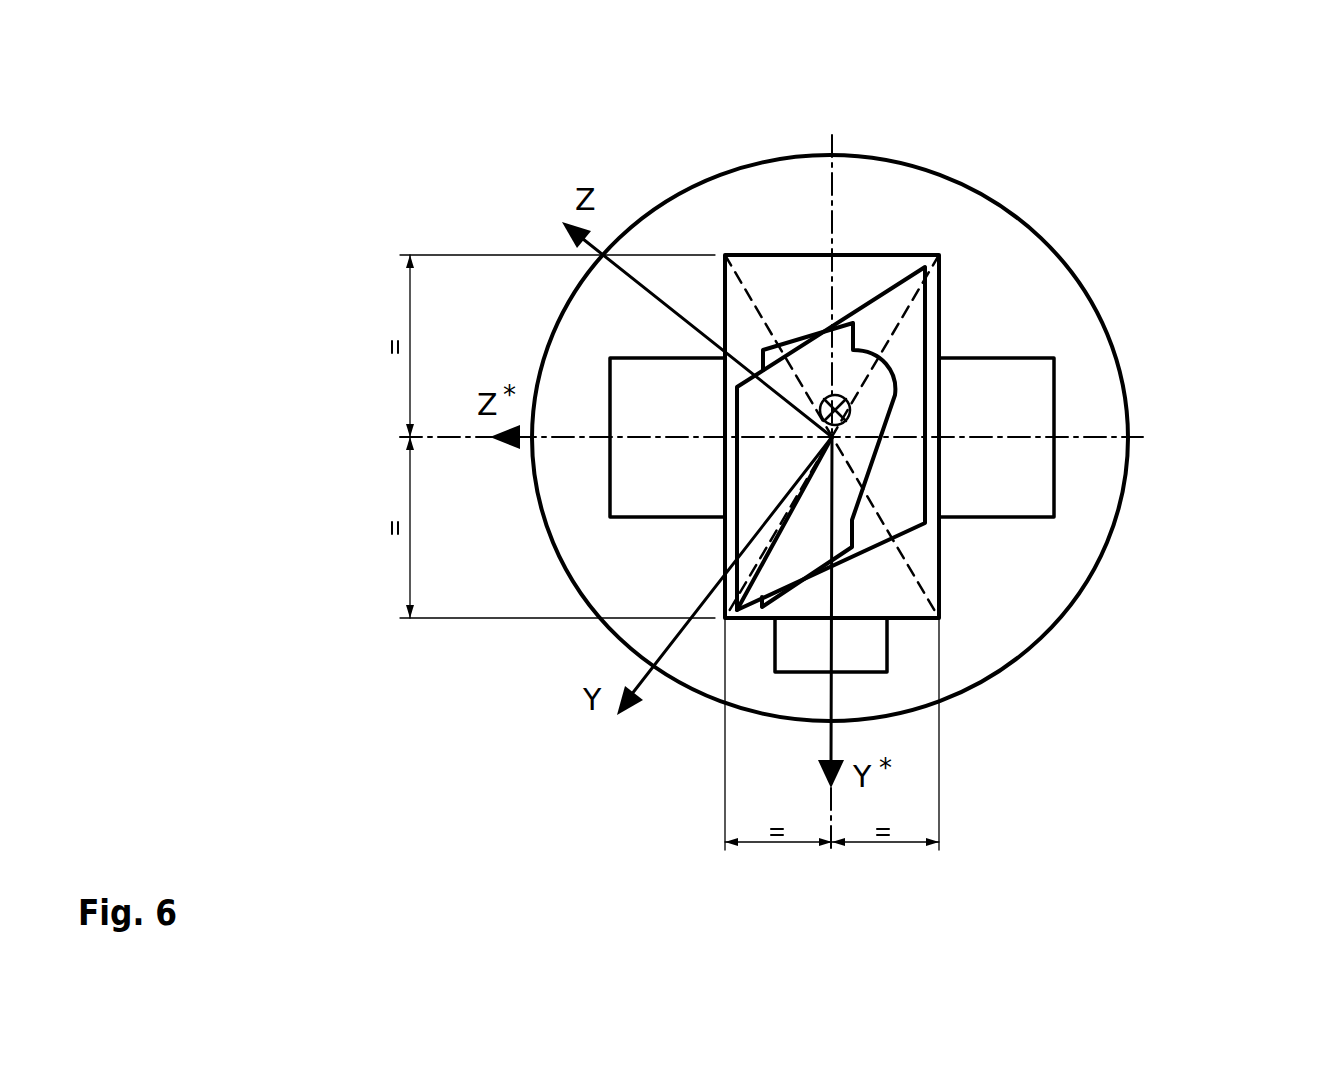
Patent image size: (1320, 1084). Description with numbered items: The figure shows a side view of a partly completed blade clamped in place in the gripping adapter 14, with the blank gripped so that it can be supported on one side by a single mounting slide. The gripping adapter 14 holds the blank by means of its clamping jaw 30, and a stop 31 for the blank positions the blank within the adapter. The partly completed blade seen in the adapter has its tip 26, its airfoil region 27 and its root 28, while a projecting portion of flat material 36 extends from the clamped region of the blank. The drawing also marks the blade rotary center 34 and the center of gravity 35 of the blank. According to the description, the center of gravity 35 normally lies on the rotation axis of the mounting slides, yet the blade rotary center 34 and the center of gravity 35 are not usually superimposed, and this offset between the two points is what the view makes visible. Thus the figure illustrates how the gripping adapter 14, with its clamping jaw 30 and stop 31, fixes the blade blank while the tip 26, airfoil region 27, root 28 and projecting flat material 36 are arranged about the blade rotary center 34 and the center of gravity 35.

The gripping adapter 14 is at (1035, 305).
The tip of the blade 26 is at (758, 472).
The airfoil region of the blade 27 is at (873, 393).
The root of the blade 28 is at (907, 355).
The clamping jaw of gripping adapter 30 is at (658, 398).
The stop for blank 31 is at (858, 648).
The blade rotary center 34 is at (836, 396).
The center of gravity of the blank 35 is at (840, 444).
The flat material, projecting portion 36 is at (915, 552).